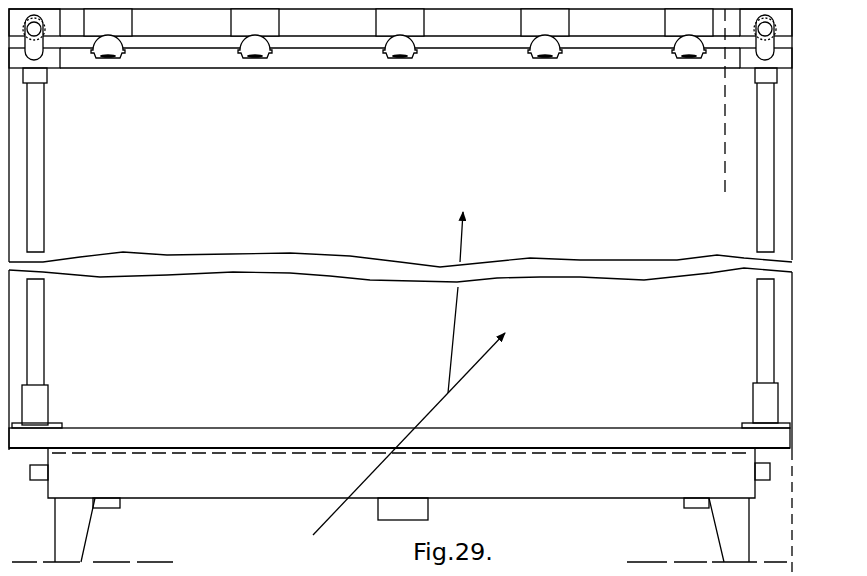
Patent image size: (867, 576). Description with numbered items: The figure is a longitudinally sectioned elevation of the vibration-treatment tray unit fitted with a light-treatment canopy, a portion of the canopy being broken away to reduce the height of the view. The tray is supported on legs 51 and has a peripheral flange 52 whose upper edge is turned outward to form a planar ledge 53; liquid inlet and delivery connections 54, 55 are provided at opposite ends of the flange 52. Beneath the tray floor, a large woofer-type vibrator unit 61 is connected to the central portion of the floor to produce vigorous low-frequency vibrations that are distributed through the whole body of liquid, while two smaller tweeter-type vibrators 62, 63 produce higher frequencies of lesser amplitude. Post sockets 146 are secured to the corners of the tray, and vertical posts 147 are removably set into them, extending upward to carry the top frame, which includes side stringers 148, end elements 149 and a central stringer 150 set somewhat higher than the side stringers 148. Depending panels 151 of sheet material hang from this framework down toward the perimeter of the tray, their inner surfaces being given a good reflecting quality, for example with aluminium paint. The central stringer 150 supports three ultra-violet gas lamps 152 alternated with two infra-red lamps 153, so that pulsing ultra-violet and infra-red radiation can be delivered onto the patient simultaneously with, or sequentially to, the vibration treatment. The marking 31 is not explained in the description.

The depending panels 151 is at (792, 352).
The central stringer 150 is at (602, 23).
The side stringers 148 is at (355, 60).
The end elements 149 is at (35, 43).
The ultra-violet lamps 152 is at (110, 60).
The infra-red lamps 153 is at (240, 62).
The vertical posts 147 is at (35, 320).
The post sockets 146 is at (35, 410).
The ledge 53 is at (157, 437).
The peripheral flange 52 is at (563, 478).
The liquid delivery connection 55 is at (42, 477).
The liquid inlet connection 54 is at (762, 480).
The additional vibrator 63 is at (105, 505).
The additional vibrator 62 is at (687, 505).
The vibrator unit 61 is at (415, 506).
The legs 51 is at (399, 530).
The guide 31 is at (712, 44).